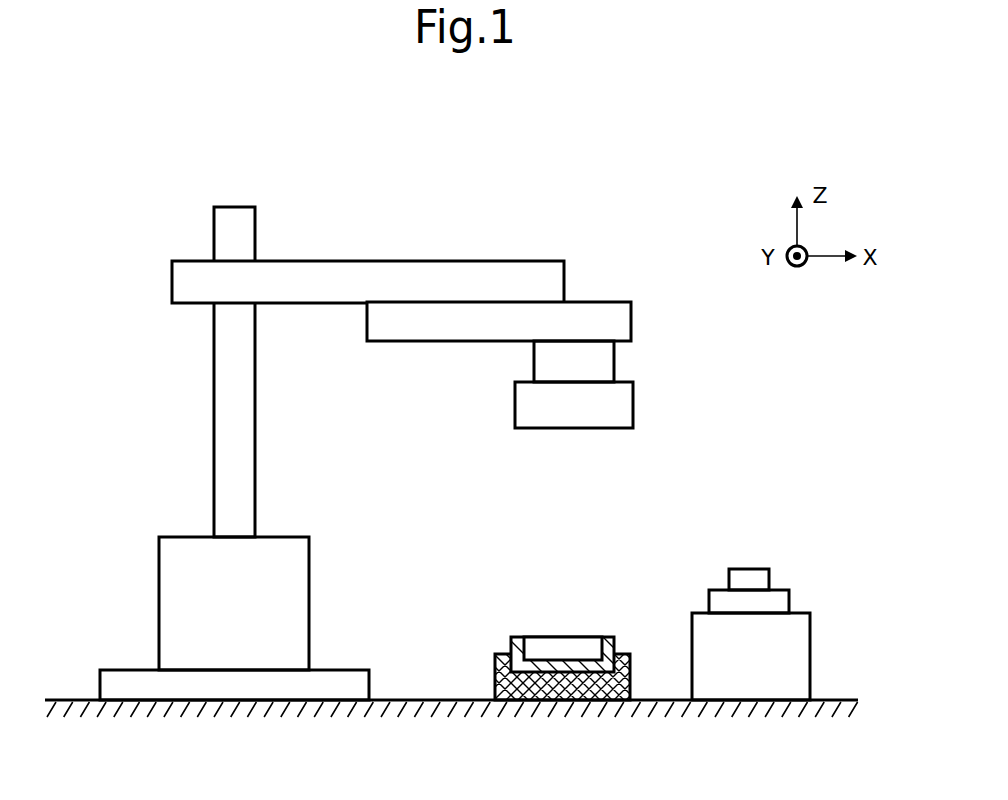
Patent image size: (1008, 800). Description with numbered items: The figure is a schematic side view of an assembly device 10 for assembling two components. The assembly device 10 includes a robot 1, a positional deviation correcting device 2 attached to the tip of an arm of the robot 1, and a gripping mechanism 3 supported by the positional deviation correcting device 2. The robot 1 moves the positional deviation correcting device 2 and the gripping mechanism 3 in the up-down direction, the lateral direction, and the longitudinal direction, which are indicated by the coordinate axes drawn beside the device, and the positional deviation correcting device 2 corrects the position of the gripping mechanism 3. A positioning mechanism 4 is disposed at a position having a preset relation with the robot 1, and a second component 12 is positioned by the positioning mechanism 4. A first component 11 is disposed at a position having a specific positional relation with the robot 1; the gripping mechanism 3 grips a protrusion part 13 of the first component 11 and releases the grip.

The robot 1 is at (212, 233).
The positional deviation correcting device 2 is at (615, 358).
The gripping mechanism 3 is at (633, 407).
The positioning mechanism 4 is at (495, 668).
The assembly device 10 is at (471, 160).
The first component 11 is at (780, 588).
The second component 12 is at (610, 635).
The protrusion part 13 is at (749, 569).